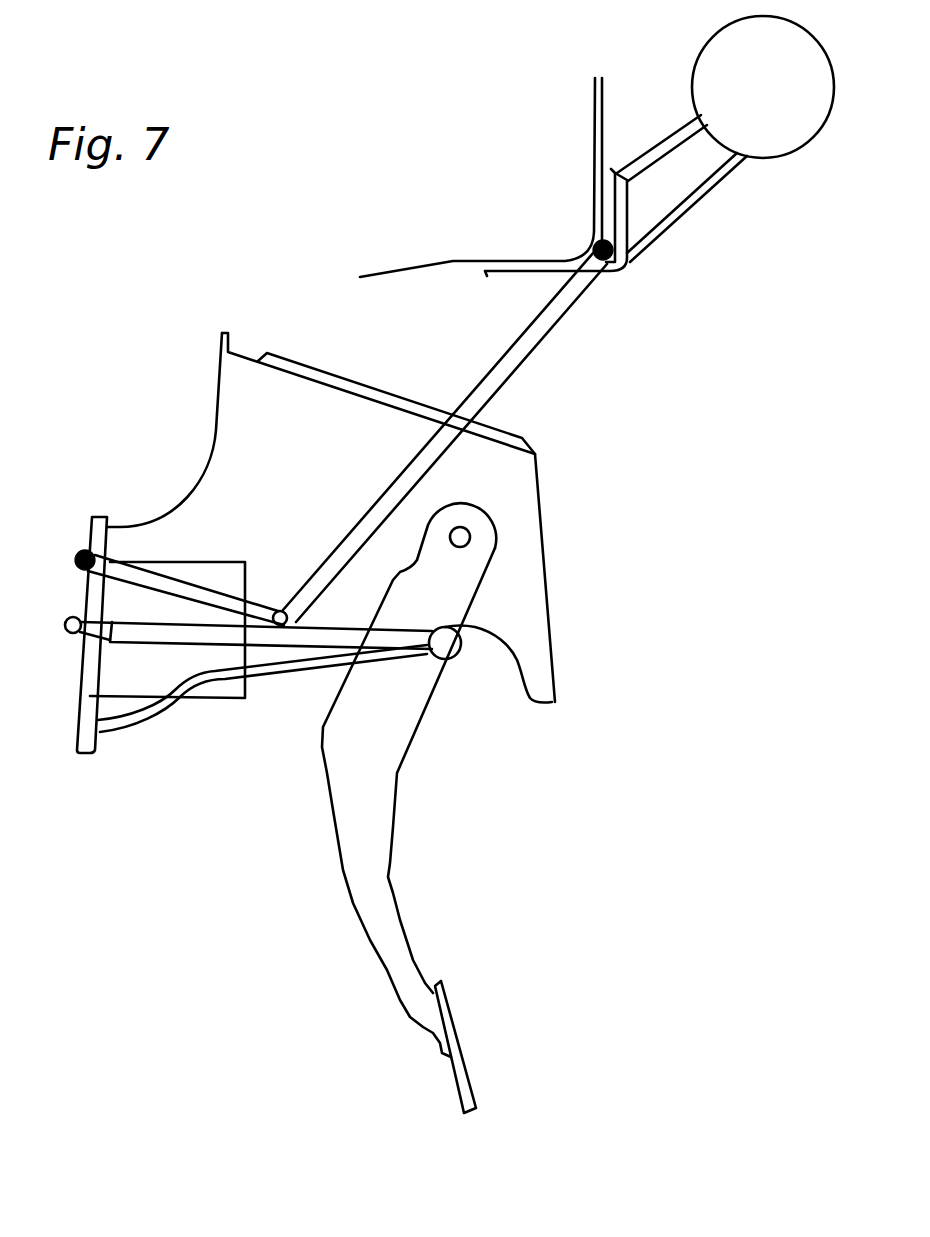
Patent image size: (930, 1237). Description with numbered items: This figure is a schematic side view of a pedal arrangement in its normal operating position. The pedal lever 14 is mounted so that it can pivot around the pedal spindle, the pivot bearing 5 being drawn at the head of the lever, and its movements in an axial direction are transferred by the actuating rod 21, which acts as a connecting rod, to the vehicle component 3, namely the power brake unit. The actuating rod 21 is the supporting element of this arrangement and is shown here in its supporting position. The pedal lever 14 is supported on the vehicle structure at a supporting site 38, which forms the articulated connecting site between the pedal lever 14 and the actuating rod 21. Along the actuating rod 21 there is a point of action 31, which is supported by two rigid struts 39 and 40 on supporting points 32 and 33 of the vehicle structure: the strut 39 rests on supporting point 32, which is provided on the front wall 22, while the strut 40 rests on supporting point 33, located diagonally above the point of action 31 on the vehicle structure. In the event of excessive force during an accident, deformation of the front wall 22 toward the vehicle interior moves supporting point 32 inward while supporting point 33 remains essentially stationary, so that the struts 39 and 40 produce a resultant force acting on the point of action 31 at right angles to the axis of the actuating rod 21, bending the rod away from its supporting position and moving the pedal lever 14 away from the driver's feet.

The vehicle component 3 is at (210, 572).
The pedal pivot bearing 5 is at (468, 533).
The pedal lever 14 is at (380, 910).
The actuating rod 21 is at (298, 642).
The front wall 22 is at (92, 517).
The point of action 31 is at (285, 607).
The supporting point 32 is at (78, 555).
The supporting point 33 is at (593, 240).
The supporting site 38 is at (452, 653).
The rigid strut 39 is at (158, 587).
The rigid strut 40 is at (492, 373).